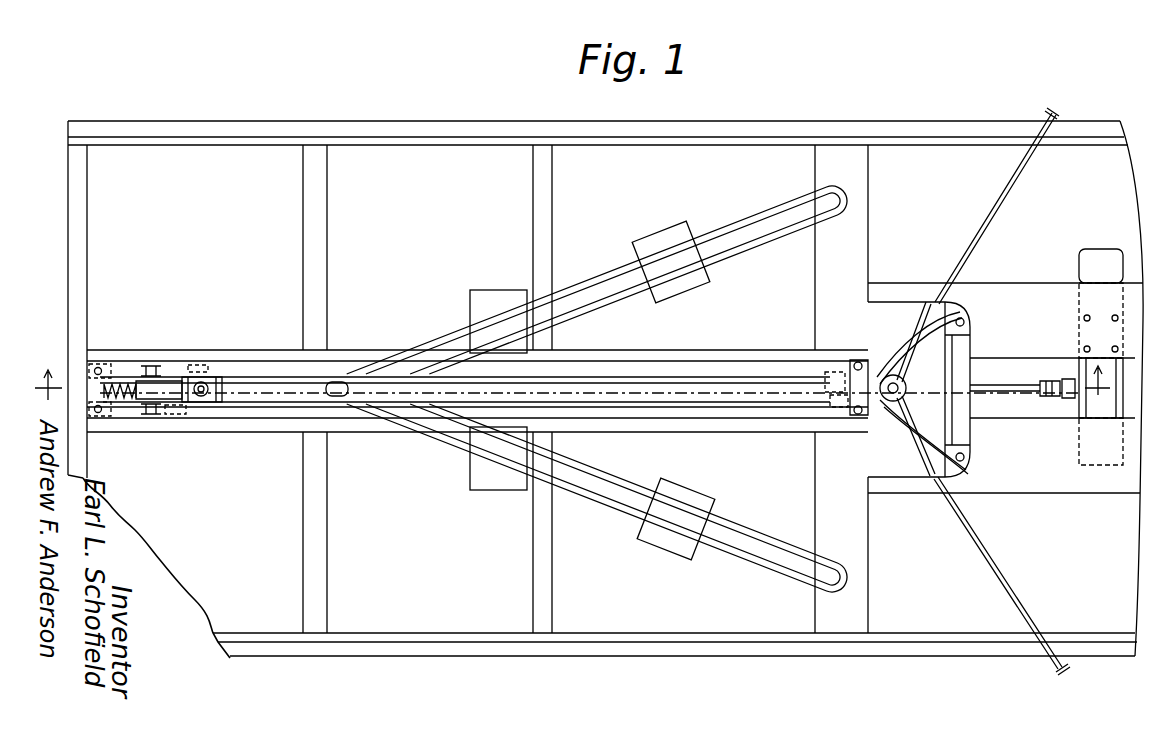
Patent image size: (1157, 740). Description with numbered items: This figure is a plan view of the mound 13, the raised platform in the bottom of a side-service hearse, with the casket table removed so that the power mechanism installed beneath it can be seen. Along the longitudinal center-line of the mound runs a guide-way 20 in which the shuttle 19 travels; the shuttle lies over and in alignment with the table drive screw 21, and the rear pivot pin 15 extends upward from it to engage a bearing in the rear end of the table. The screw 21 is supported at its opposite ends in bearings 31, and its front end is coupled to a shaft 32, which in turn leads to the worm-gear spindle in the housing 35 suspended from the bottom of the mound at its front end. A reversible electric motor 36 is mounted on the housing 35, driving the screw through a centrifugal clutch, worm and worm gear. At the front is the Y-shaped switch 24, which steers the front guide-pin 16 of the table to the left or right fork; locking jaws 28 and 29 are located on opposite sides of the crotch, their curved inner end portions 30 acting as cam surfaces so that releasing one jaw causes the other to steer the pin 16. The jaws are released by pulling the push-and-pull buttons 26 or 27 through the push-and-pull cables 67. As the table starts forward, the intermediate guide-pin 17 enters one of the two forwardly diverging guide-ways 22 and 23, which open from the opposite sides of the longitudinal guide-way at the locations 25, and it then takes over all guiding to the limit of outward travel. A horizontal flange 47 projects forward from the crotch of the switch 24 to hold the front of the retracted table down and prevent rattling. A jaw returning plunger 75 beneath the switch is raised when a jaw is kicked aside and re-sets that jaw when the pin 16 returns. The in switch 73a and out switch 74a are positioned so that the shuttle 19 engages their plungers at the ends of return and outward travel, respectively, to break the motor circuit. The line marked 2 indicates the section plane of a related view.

The mound 13 is at (537, 637).
The rear pivot pin 15 is at (205, 380).
The front guide-pin 16 is at (848, 410).
The intermediate guide-pin 17 is at (336, 398).
The shuttle 19 is at (214, 410).
The longitudinally extending guide-way 20 is at (728, 378).
The table drive screw 21 is at (120, 387).
The diverging guide-way 22 is at (606, 278).
The diverging guide-way 23 is at (598, 485).
The Y-shaped switch 24 is at (898, 348).
The guide-way openings 25 is at (334, 381).
The push-and-pull button 26 is at (1052, 110).
The push-and-pull button 27 is at (1063, 668).
The locking jaw 28 is at (918, 346).
The locking jaw 29 is at (914, 432).
The inner end portions of jaws 30 is at (920, 440).
The bearings 31 is at (93, 383).
The shaft 32 is at (984, 390).
The housing 35 is at (1077, 410).
The reversible electric motor 36 is at (1086, 258).
The horizontal flange 47 is at (966, 360).
The push-and-pull cables 67 is at (1030, 165).
The in switch 73a is at (171, 418).
The out switch 74a is at (832, 428).
The jaw returning plunger 75 is at (888, 404).
The section line 2- 2 is at (572, 395).